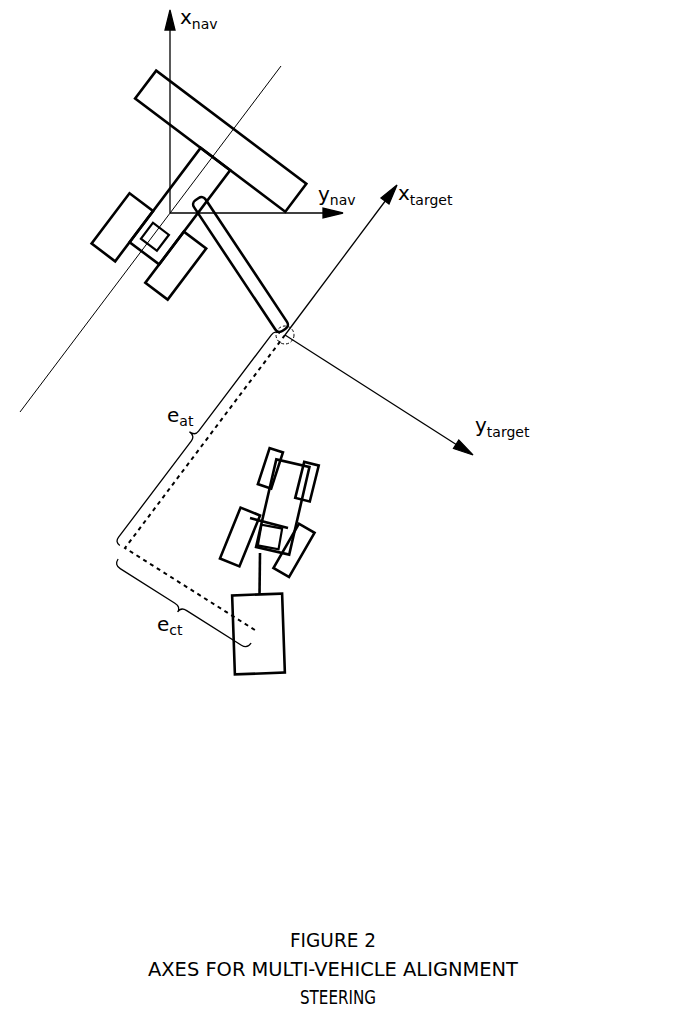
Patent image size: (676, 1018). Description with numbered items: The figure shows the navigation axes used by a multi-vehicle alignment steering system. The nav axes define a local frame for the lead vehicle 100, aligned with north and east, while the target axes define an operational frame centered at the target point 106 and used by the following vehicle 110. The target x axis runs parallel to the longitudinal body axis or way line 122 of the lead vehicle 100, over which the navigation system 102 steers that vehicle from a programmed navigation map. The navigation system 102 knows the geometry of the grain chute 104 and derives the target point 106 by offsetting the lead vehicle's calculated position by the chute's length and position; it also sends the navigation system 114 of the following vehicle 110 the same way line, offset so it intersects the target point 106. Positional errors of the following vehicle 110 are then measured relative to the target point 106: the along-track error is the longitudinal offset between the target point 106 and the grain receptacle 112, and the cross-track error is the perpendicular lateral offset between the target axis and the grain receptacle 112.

The lead vehicle 100 is at (98, 232).
The navigation system 102 is at (157, 222).
The way line 122 is at (270, 80).
The grain chute 104 is at (260, 312).
The target point 106 is at (297, 337).
The following vehicle 110 is at (298, 510).
The navigation system 114 is at (272, 527).
The grain receptacle 112 is at (285, 634).